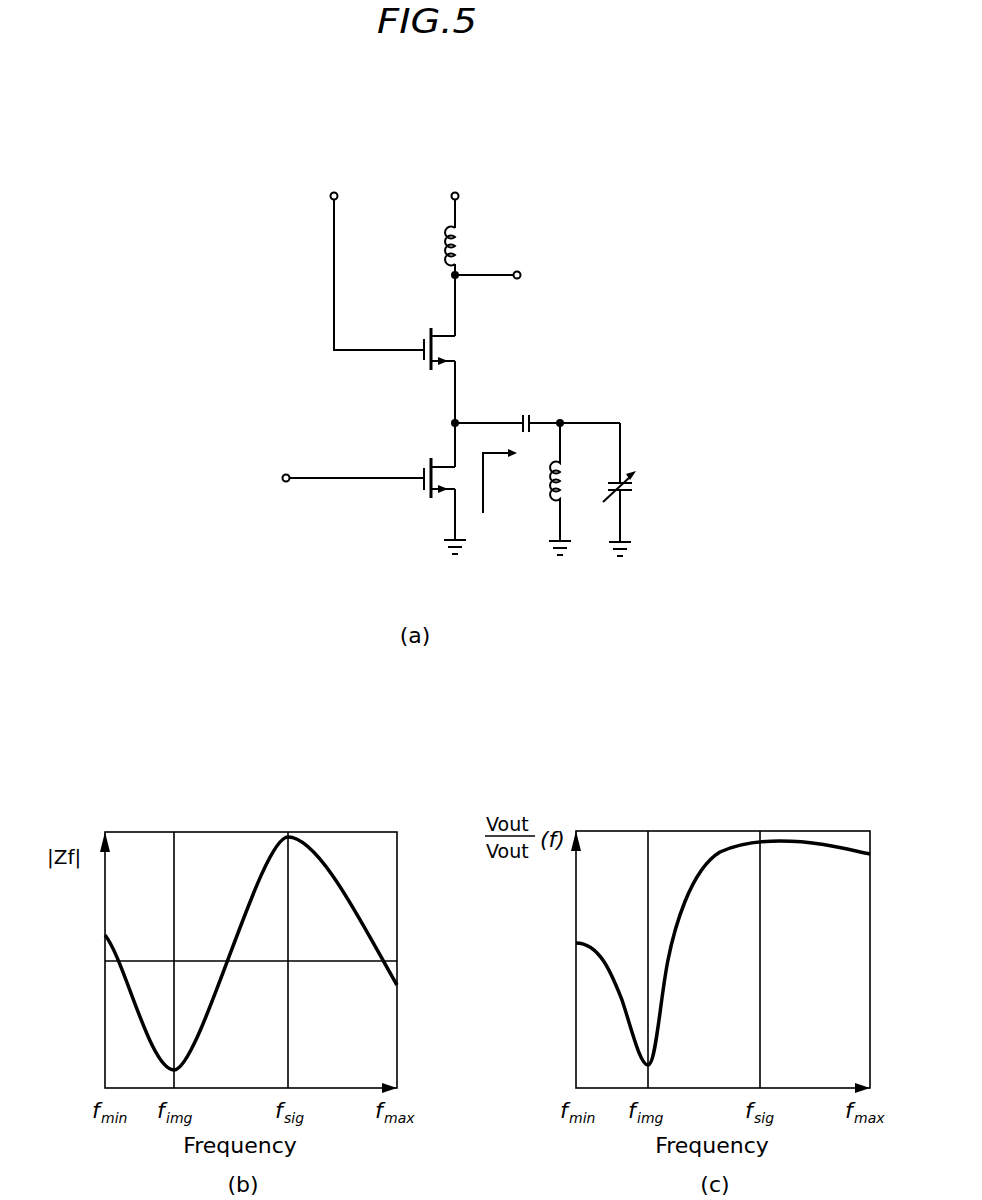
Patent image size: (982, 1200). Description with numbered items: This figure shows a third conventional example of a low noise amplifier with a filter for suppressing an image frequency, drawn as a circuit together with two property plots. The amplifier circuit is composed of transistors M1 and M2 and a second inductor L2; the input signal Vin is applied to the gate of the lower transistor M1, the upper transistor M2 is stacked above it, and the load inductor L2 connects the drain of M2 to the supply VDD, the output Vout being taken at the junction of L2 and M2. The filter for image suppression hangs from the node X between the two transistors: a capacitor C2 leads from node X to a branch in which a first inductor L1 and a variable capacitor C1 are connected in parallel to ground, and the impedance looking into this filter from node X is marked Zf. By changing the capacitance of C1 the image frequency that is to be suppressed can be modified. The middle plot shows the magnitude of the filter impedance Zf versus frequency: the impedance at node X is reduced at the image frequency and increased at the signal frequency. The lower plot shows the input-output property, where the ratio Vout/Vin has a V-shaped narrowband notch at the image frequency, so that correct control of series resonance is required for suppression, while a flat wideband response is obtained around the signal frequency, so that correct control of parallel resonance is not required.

The transistor M1 is at (423, 476).
The transistor M2 is at (423, 347).
The first inductor L1 is at (549, 489).
The second inductor L2 is at (437, 245).
The variable capacitor C1 is at (632, 489).
The capacitor C2 is at (527, 409).
The supply voltage VDD is at (394, 259).
The input voltage Vin is at (347, 493).
The output voltage Vout is at (512, 275).
The node X is at (447, 424).
The filter impedance Zf is at (496, 497).